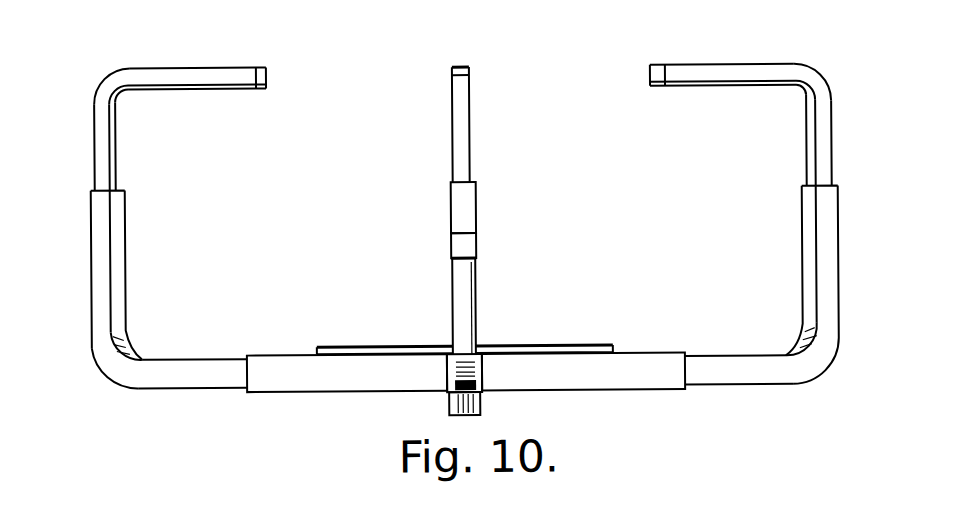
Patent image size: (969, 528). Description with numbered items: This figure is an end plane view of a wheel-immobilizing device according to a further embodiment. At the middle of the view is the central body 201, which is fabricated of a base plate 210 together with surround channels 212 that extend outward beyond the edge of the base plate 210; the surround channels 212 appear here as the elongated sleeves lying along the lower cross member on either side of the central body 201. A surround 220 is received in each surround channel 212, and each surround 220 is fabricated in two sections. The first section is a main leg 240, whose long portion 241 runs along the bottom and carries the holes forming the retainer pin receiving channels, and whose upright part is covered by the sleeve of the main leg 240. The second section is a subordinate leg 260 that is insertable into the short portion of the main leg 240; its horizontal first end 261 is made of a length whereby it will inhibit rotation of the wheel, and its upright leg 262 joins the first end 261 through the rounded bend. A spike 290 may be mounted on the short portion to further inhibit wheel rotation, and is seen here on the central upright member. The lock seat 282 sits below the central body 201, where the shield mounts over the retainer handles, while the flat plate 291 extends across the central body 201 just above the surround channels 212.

The central body 201 is at (323, 420).
The base plate 210 is at (510, 345).
The surround channels 212 is at (278, 362).
The surround 220 is at (100, 376).
The main leg 240 is at (119, 256).
The long portion 241 is at (197, 378).
The subordinate leg 260 is at (90, 88).
The first end 261 is at (195, 71).
The vertical leg 262 is at (94, 166).
The lock seat 282 is at (482, 403).
The spike 290 is at (457, 247).
The plate 291 is at (358, 345).